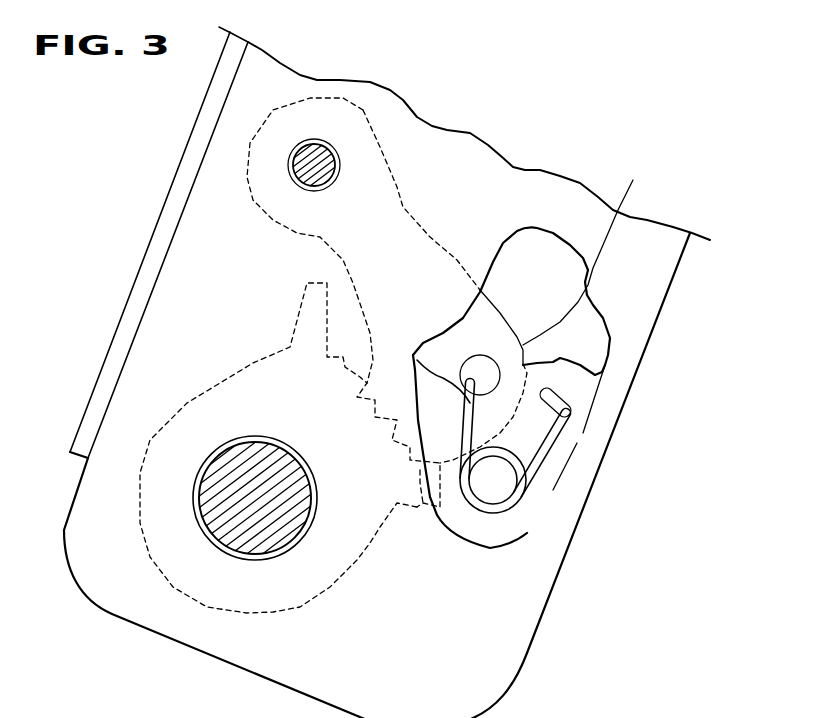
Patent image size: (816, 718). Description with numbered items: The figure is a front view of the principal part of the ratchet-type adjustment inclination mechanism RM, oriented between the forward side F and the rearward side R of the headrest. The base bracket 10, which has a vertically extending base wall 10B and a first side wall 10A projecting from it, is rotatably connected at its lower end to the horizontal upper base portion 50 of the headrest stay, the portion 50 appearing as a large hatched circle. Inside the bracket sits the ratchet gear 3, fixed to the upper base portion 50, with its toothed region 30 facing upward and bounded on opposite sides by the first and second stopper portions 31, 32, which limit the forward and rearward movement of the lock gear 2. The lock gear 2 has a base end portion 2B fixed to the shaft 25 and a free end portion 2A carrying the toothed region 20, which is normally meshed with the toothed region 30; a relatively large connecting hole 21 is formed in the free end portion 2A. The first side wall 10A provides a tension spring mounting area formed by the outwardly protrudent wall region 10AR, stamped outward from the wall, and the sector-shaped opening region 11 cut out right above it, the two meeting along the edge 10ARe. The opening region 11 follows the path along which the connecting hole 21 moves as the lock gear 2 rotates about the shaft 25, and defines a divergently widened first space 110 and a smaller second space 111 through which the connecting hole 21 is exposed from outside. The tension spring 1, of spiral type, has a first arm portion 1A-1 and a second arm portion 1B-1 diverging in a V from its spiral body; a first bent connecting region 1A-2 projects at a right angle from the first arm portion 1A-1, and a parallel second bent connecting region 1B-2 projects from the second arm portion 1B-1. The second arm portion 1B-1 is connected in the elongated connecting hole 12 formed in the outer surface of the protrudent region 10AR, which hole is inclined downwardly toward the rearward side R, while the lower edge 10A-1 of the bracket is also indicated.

The tension spring 1 is at (525, 363).
The first arm portion 1A-1 is at (450, 437).
The first bent connecting region 1A-2 is at (488, 356).
The second arm portion 1B-1 is at (553, 453).
The second bent connecting region 1B-2 is at (573, 407).
The lock gear 2 is at (410, 208).
The free end portion 2A is at (591, 250).
The base end portion 2B is at (363, 110).
The ratchet gear 3 is at (370, 545).
The base bracket 10 is at (672, 281).
The first side wall 10A is at (402, 130).
The bracket lower edge 10A-1 is at (490, 630).
The outwardly protrudent wall region 10AR is at (547, 473).
The edge of the outwardly protrudent region 10ARe is at (590, 365).
The base wall 10B is at (125, 303).
The opening region 11 is at (577, 327).
The elongated connecting hole 12 is at (542, 418).
The toothed region 20 is at (375, 418).
The connecting hole 21 is at (467, 360).
The shaft 25 is at (318, 147).
The toothed region 30 is at (361, 378).
The first stopper portion 31 is at (417, 508).
The second stopper portion 32 is at (293, 327).
The horizontal upper base portion 50 is at (263, 520).
The first space 110 is at (547, 253).
The second space 111 is at (447, 350).
The ratchet-type adjustment inclination mechanism RM is at (676, 200).
The forward side F is at (53, 216).
The rearward side R is at (752, 331).